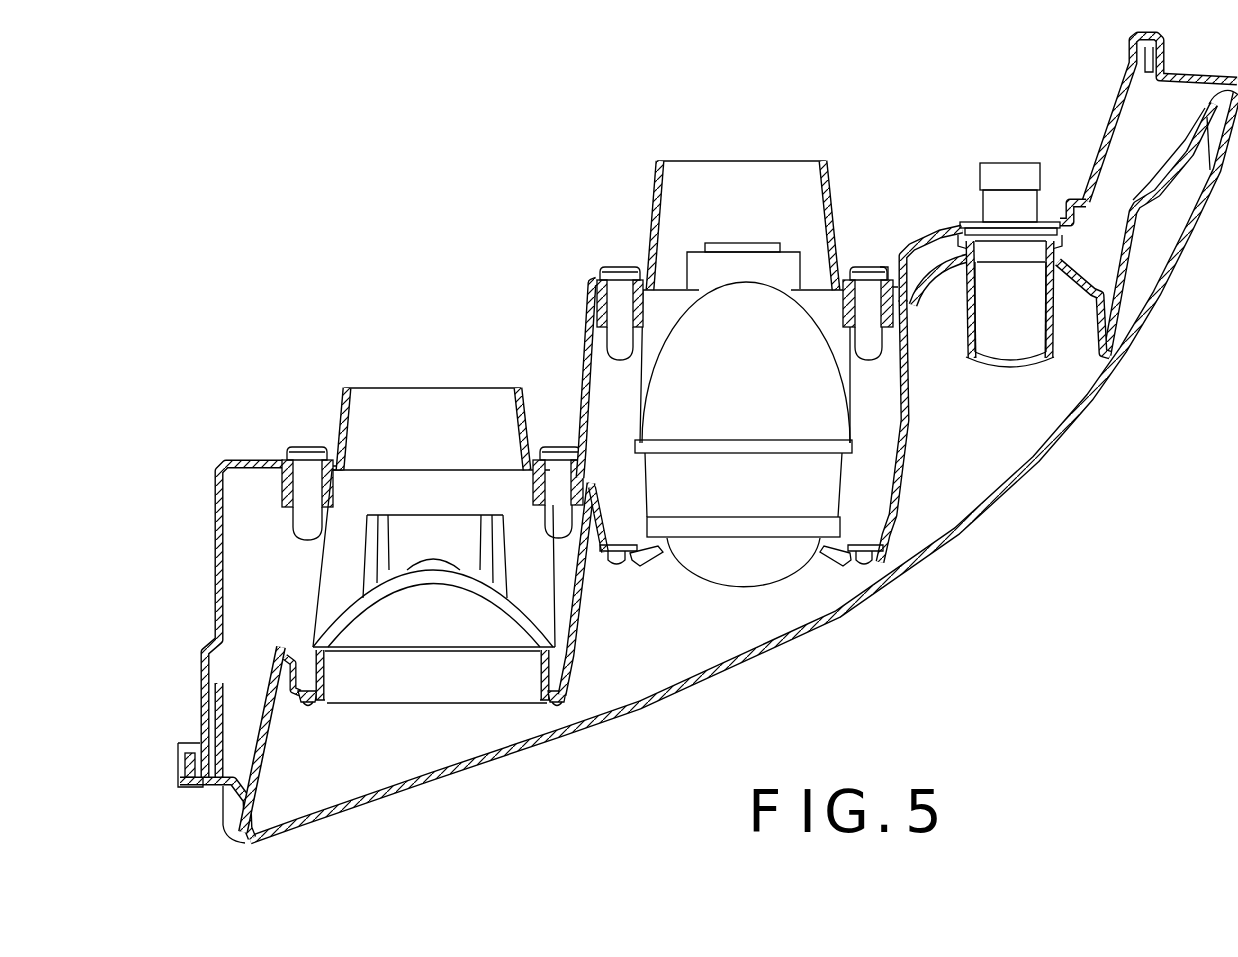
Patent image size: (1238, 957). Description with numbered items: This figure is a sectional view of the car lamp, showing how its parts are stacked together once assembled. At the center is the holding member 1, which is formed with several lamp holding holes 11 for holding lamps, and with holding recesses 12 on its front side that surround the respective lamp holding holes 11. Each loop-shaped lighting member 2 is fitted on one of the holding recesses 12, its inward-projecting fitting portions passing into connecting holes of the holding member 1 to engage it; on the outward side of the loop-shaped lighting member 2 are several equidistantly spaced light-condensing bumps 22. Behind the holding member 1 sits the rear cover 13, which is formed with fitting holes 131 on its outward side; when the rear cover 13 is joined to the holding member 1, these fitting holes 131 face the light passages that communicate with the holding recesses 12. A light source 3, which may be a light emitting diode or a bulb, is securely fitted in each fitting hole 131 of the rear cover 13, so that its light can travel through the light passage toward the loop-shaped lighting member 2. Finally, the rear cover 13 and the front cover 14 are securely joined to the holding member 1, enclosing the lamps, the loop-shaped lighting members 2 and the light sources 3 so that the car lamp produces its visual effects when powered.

The holding member 1 is at (262, 758).
The lamp holding hole 11 is at (413, 417).
The holding recess 12 is at (330, 706).
The rear cover 13 is at (216, 597).
The fitting hole 131 is at (313, 462).
The front cover 14 is at (832, 620).
The loop-shaped lighting member 2 is at (308, 706).
The light-condensing bump 22 is at (553, 708).
The light source 3 is at (318, 525).